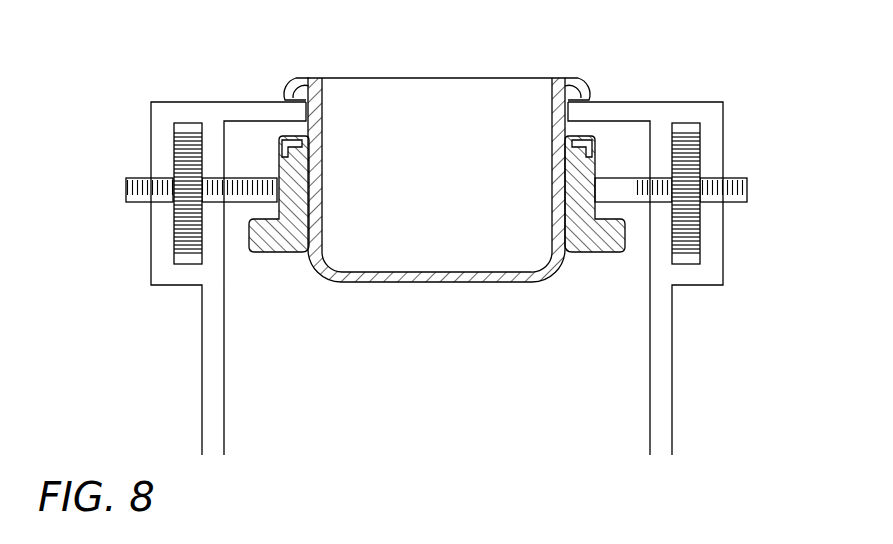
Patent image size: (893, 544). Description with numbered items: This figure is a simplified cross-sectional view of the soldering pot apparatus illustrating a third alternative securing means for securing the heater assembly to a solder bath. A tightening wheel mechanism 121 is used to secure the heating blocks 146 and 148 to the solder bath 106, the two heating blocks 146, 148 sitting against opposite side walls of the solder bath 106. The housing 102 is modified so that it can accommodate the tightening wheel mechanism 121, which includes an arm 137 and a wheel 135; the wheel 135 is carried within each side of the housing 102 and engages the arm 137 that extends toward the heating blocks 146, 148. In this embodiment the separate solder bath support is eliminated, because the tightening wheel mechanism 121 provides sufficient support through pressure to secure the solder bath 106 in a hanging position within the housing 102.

The housing 102 is at (203, 368).
The solder bath 106 is at (430, 110).
The tightening wheel mechanism 121 is at (684, 247).
The wheel 135 is at (685, 133).
The arm 137 is at (747, 190).
The heating block 146 is at (283, 242).
The heating block 148 is at (587, 235).